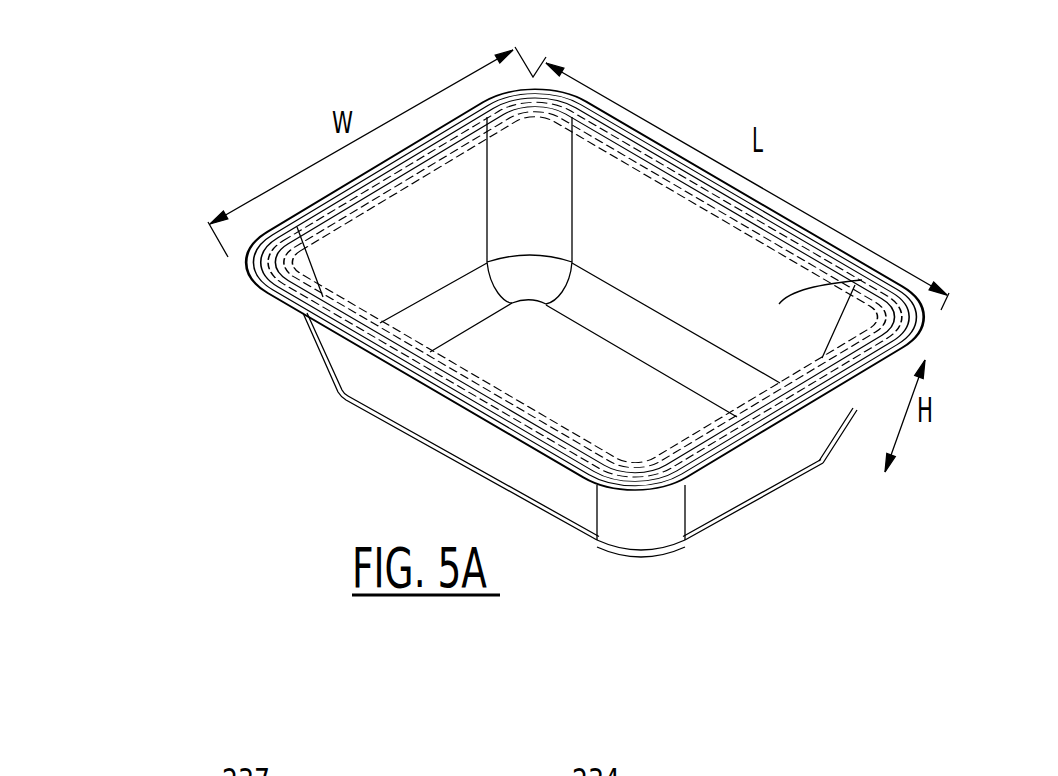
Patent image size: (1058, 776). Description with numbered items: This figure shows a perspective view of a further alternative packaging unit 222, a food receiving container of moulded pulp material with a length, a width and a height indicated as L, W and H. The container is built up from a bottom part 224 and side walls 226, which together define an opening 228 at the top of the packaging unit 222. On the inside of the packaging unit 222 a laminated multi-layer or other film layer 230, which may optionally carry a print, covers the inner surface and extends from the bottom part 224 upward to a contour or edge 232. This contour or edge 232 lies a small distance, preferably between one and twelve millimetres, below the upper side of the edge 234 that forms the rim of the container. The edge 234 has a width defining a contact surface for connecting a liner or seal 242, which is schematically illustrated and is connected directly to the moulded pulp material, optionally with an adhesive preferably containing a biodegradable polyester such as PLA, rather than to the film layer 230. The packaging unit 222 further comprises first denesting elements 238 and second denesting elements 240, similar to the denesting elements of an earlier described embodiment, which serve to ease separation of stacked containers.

The packaging unit 222 is at (175, 222).
The bottom part 224 is at (692, 433).
The side walls 226 is at (357, 373).
The opening 228 is at (255, 322).
The laminated multi-layer or other film layer 230 is at (440, 270).
The contour or edge 232 is at (678, 192).
The edge 234 is at (786, 237).
The first denesting elements 238 is at (549, 124).
The second denesting elements 240 is at (840, 423).
The liner or seal 242 is at (829, 360).